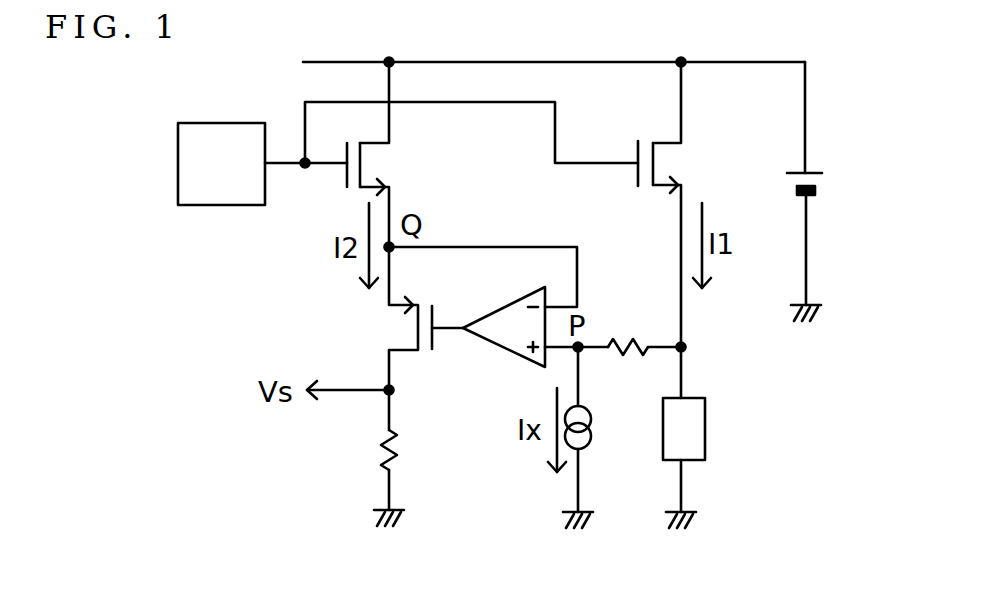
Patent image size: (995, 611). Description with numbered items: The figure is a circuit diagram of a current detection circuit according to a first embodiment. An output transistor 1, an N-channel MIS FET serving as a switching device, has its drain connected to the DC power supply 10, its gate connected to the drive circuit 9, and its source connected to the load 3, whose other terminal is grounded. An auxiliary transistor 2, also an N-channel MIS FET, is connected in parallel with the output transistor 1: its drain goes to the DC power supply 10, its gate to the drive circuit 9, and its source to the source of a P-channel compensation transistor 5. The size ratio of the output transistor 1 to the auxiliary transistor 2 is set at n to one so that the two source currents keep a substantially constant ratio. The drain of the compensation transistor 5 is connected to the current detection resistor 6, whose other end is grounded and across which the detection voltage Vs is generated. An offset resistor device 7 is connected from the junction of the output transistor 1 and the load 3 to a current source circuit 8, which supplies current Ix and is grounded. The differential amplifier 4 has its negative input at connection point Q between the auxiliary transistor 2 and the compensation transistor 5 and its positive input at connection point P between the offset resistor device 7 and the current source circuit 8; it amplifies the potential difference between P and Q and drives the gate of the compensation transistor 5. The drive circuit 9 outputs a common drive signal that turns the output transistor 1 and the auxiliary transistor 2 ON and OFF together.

The output transistor 1 is at (681, 163).
The auxiliary transistor 2 is at (390, 163).
The load 3 is at (705, 398).
The differential amplifier 4 is at (525, 360).
The compensation transistor 5 is at (390, 328).
The current detection resistor 6 is at (383, 443).
The offset resistor device 7 is at (623, 330).
The current source circuit 8 is at (592, 440).
The drive circuit 9 is at (178, 163).
The DC power supply 10 is at (815, 173).